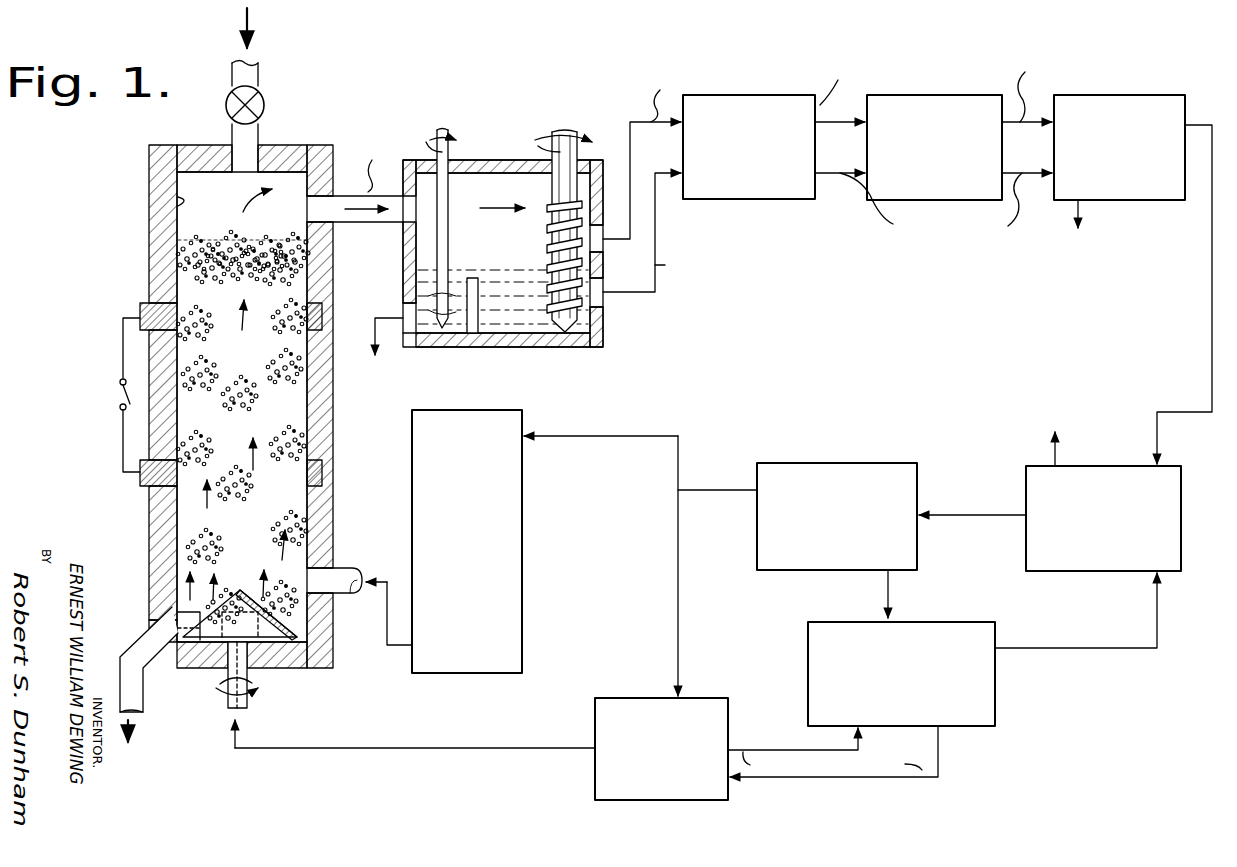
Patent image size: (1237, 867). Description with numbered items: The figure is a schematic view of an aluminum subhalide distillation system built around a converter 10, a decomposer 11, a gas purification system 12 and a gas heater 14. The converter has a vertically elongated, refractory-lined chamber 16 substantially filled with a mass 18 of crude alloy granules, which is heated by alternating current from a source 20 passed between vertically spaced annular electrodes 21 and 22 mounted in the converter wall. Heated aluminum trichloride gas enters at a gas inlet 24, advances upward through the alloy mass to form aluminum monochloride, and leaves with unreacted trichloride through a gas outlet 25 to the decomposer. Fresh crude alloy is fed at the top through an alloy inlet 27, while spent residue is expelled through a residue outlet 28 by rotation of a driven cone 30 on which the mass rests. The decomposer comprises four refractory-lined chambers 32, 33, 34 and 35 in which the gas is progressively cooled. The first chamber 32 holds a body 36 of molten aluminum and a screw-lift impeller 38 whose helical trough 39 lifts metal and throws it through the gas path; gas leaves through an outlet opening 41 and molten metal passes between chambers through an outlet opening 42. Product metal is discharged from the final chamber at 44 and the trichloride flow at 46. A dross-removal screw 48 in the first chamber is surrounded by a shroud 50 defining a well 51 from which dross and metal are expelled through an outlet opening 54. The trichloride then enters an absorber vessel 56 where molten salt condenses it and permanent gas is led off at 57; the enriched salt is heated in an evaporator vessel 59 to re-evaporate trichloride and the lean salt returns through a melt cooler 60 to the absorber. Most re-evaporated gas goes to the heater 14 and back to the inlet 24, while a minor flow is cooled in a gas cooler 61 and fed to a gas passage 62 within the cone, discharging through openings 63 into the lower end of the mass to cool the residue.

The converter 10 is at (336, 432).
The decomposer 11 is at (810, 250).
The gas purification system 12 is at (876, 406).
The gas heater 14 is at (474, 455).
The converter chamber 16 is at (178, 199).
The mass of crude alloy granules 18 is at (182, 254).
The source of alternating current 20 is at (118, 392).
The annular electrode 21 is at (178, 310).
The annular electrode 22 is at (140, 474).
The gas inlet 24 is at (346, 580).
The gas outlet 25 is at (355, 216).
The alloy inlet 27 is at (232, 118).
The residue outlet 28 is at (141, 690).
The rotary cone 30 is at (286, 648).
The first decomposer chamber 32 is at (493, 178).
The second decomposer chamber 33 is at (759, 115).
The third decomposer chamber 34 is at (945, 115).
The fourth decomposer chamber 35 is at (1129, 115).
The body of molten aluminum metal 36 is at (526, 333).
The screw-lift impeller 38 is at (567, 138).
The helical trough 39 is at (580, 302).
The outlet opening 41 is at (606, 236).
The outlet opening 42 is at (604, 292).
The product metal discharge 44 is at (1076, 206).
The trichloride gas discharge 46 is at (1200, 125).
The screw 48 is at (449, 192).
The shroud 50 is at (474, 322).
The well 51 is at (456, 335).
The outlet opening 54 is at (402, 316).
The absorber vessel 56 is at (1112, 489).
The permanent gas outlet 57 is at (1050, 447).
The evaporator vessel 59 is at (845, 486).
The melt cooler 60 is at (908, 644).
The gas cooler 61 is at (669, 722).
The gas passage 62 is at (229, 694).
The openings 63 is at (178, 616).